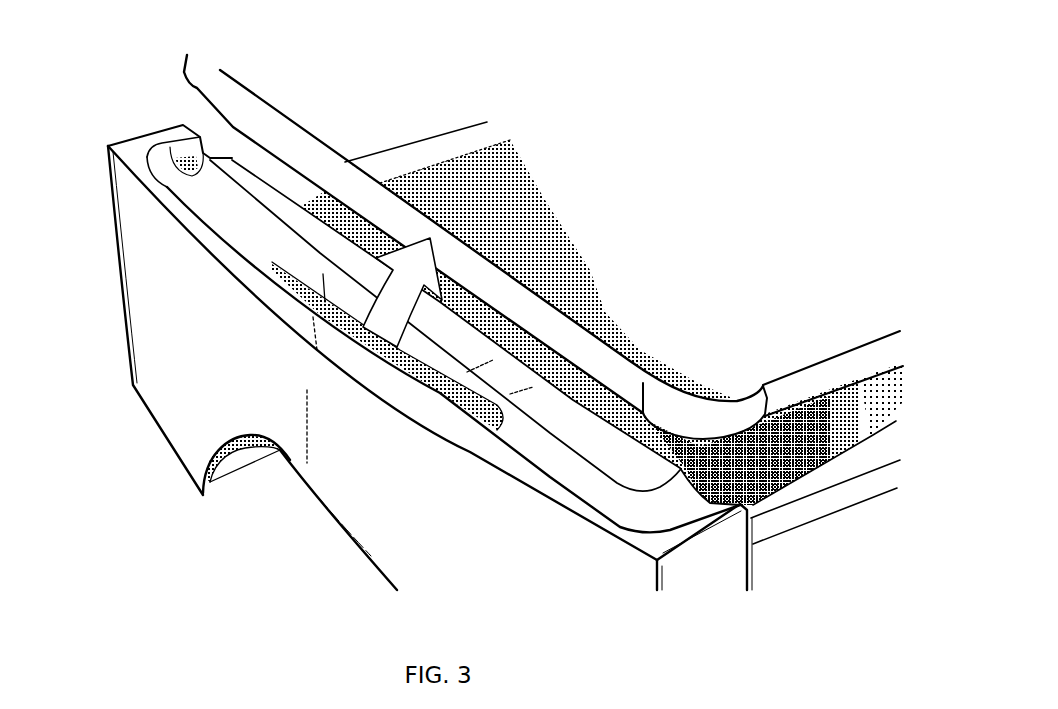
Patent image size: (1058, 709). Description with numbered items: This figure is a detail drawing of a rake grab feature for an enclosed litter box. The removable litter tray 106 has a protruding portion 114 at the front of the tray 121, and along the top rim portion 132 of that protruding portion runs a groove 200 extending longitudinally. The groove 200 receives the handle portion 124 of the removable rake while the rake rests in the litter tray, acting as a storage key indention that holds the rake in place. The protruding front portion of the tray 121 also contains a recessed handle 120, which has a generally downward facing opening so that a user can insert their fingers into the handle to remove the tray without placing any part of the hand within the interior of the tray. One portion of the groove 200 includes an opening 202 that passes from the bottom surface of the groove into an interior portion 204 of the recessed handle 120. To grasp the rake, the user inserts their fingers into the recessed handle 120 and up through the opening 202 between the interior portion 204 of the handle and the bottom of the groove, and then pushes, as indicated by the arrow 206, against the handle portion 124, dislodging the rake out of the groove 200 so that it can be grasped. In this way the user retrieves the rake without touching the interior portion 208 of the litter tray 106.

The removable litter tray 106 is at (117, 386).
The protruding portion 114 is at (689, 568).
The recessed handle 120 is at (233, 433).
The tray 121 is at (419, 506).
The handle portion 124 is at (285, 127).
The top rim portion 132 is at (367, 352).
The groove 200 is at (200, 140).
The opening 202 is at (320, 293).
The interior portion 204 is at (239, 459).
The push 206 is at (383, 299).
The interior portion 208 is at (516, 262).